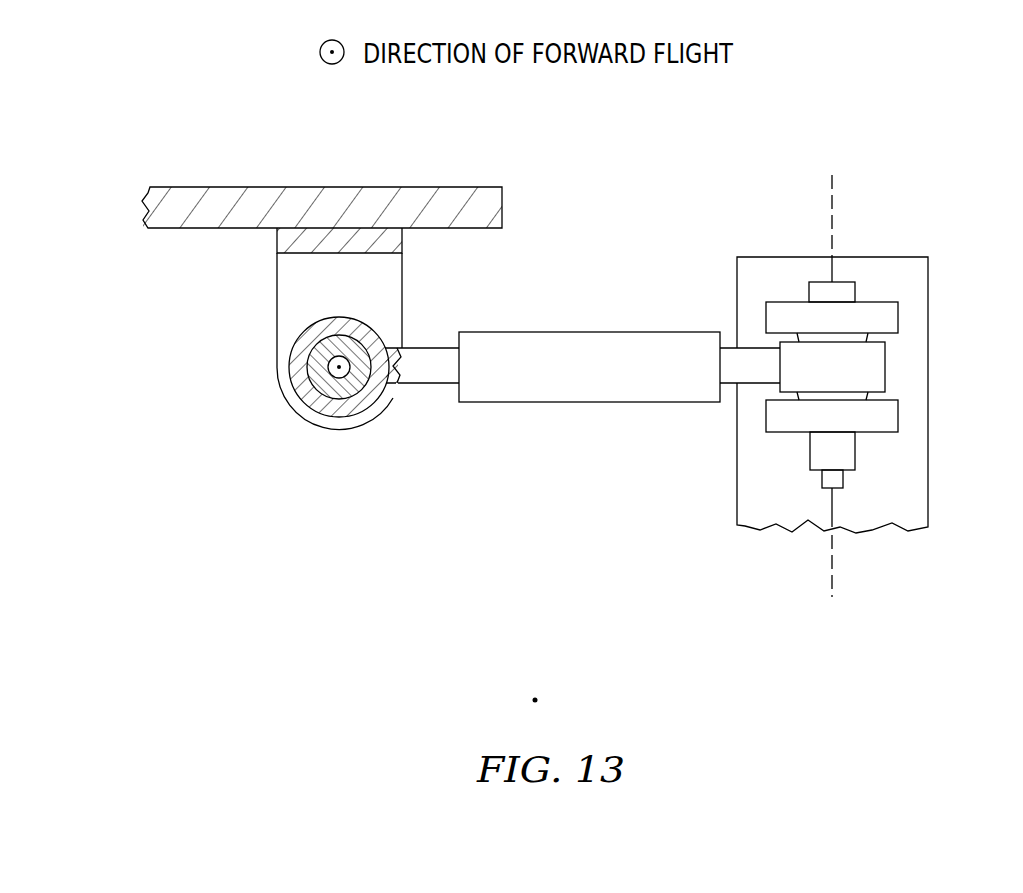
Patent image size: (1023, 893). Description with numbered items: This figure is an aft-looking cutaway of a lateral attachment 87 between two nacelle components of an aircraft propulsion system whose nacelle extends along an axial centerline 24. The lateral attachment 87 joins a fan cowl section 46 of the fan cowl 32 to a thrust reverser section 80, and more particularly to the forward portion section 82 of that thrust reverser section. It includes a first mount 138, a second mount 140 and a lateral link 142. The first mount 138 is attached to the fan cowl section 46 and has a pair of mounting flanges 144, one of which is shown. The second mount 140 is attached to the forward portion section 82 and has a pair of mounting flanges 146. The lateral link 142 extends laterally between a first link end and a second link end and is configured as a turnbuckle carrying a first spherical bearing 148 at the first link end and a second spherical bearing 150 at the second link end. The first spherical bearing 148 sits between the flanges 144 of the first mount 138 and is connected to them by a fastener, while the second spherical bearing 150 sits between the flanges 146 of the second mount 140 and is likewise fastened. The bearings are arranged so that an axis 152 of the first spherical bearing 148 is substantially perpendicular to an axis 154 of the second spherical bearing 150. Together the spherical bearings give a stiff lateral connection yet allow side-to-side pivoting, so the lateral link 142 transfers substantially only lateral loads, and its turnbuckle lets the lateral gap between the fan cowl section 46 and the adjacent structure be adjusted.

The axial centerline 24 is at (535, 700).
The fan cowl 32 is at (326, 159).
The fan cowl section 46 is at (453, 186).
The thrust reverser section 80 is at (832, 345).
The forward portion section 82 is at (843, 255).
The lateral attachment 87 is at (443, 477).
The first mount 138 is at (276, 300).
The second mount 140 is at (766, 438).
The lateral link 142 is at (606, 330).
The mounting flanges 144 is at (404, 292).
The mounting flanges 146 is at (780, 313).
The first spherical bearing 148 is at (323, 403).
The second spherical bearing 150 is at (869, 336).
The axis of the first spherical bearing 152 is at (337, 367).
The axis of the second spherical bearing 154 is at (830, 578).